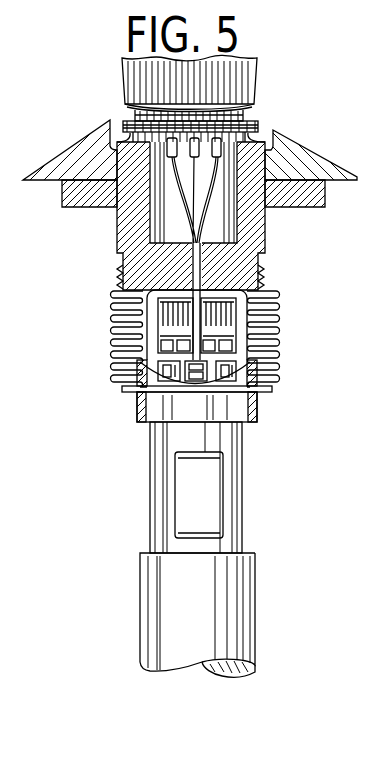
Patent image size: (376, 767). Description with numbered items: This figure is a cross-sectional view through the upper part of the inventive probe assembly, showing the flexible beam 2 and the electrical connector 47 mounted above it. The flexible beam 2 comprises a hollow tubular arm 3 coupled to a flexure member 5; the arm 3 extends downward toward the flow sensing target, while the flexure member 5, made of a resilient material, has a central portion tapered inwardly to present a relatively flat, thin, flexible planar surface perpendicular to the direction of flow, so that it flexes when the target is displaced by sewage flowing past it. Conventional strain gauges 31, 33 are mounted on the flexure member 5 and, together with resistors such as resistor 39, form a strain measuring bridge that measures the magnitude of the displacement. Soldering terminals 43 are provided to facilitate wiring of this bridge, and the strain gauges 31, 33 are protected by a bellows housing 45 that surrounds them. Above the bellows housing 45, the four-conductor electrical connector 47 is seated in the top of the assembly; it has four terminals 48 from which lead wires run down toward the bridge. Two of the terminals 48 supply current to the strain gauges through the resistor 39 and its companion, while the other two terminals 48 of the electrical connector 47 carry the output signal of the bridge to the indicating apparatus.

The flexible beam 2 is at (245, 549).
The arm 3 is at (237, 645).
The flexure member 5 is at (244, 486).
The strain gauge 31 is at (160, 316).
The strain gauge 33 is at (238, 331).
The resistor 39 is at (268, 390).
The soldering terminals 43 is at (238, 363).
The bellows housing 45 is at (110, 332).
The electrical connector 47 is at (222, 115).
The terminals 48 is at (202, 203).